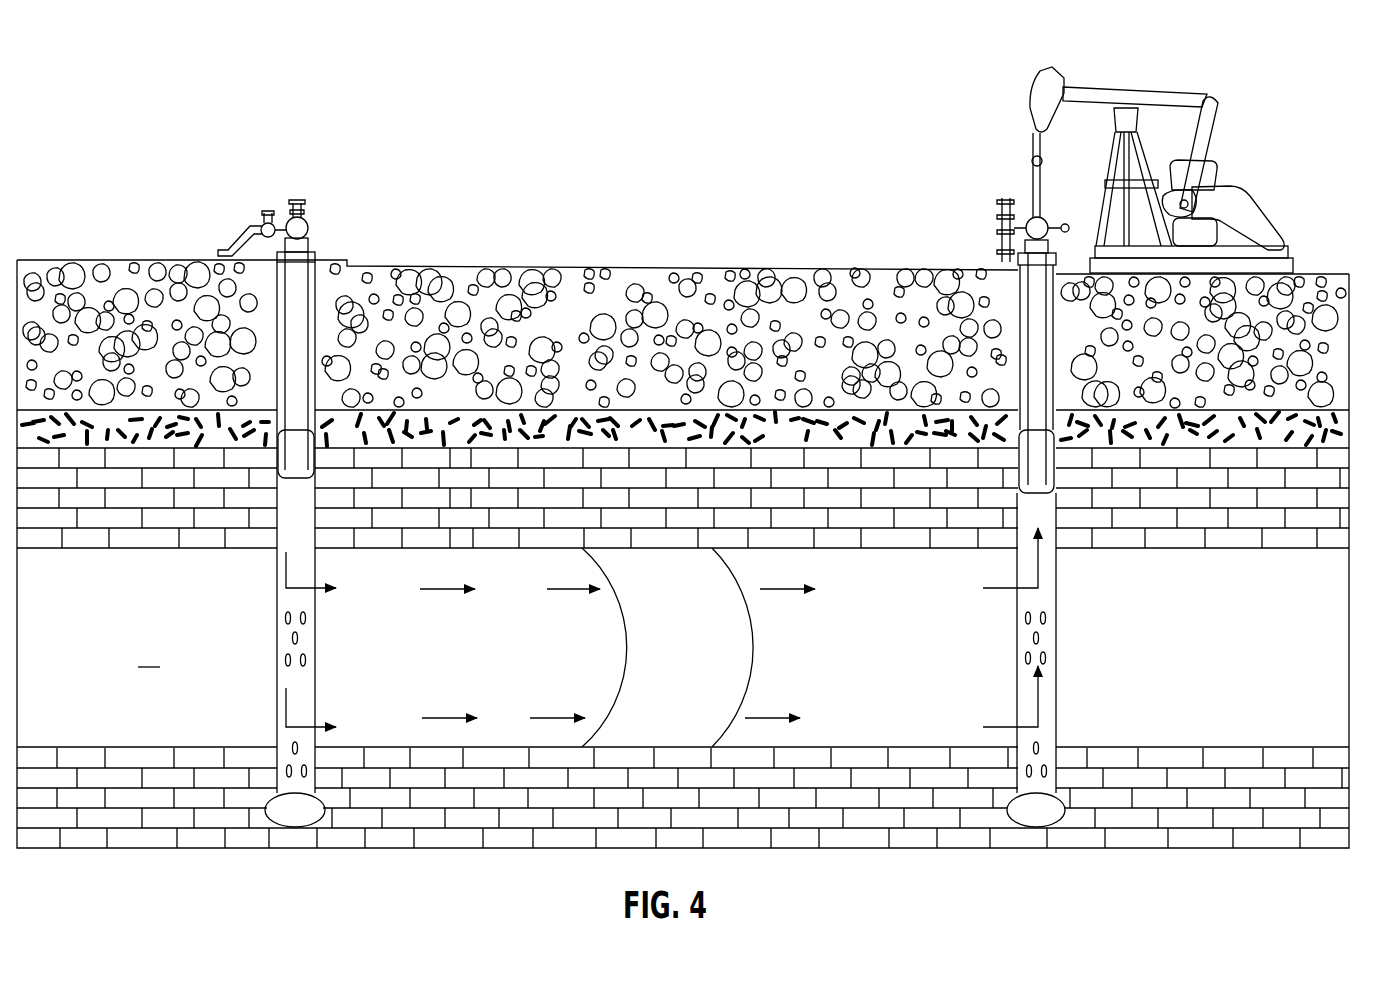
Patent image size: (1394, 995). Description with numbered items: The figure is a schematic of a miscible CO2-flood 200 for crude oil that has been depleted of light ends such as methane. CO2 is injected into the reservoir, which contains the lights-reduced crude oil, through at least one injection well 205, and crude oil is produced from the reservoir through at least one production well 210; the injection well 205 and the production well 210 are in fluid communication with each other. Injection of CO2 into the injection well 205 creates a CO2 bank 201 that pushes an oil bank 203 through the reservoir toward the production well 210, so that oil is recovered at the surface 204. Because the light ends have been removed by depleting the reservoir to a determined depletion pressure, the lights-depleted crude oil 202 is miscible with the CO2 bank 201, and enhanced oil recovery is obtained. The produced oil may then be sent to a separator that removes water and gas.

The miscible CO2-flood 200 is at (724, 169).
The CO2 bank 201 is at (468, 630).
The lights-depleted crude oil 202 is at (688, 546).
The oil bank 203 is at (828, 629).
The surface 204 is at (40, 258).
The injection well 205 is at (317, 240).
The production well 210 is at (1140, 78).